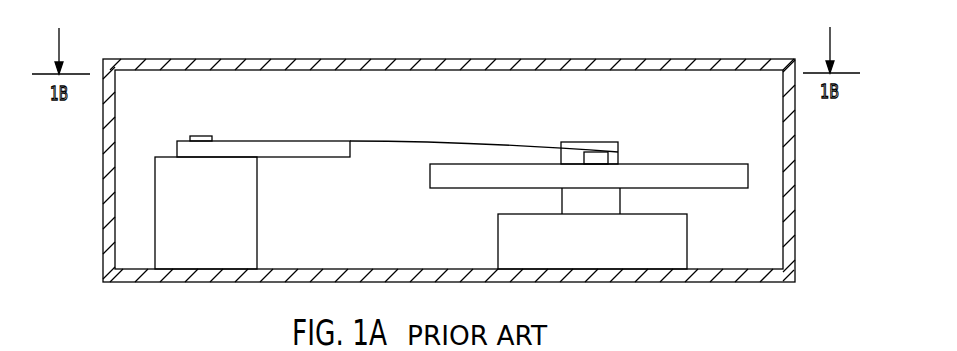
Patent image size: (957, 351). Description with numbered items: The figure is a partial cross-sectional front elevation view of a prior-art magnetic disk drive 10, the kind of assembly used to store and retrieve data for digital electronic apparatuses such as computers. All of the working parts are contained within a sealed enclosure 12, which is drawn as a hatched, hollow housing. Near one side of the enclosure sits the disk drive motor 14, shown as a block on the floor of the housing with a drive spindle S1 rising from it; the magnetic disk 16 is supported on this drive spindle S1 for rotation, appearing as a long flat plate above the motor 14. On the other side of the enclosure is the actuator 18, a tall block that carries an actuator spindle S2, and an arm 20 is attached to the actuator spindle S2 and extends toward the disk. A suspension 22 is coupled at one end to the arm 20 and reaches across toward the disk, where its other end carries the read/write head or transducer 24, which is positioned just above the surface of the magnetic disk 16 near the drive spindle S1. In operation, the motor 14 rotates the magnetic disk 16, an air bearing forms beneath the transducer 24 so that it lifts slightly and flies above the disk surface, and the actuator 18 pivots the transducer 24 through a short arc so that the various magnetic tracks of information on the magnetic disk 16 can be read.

The magnetic disk drive 10 is at (549, 57).
The sealed enclosure 12 is at (630, 277).
The disk drive motor 14 is at (583, 253).
The magnetic disk 16 is at (692, 164).
The actuator 18 is at (247, 219).
The arm 20 is at (287, 147).
The suspension 22 is at (372, 143).
The transducer 24 is at (600, 157).
The drive spindle S1 is at (577, 141).
The actuator spindle S2 is at (199, 136).